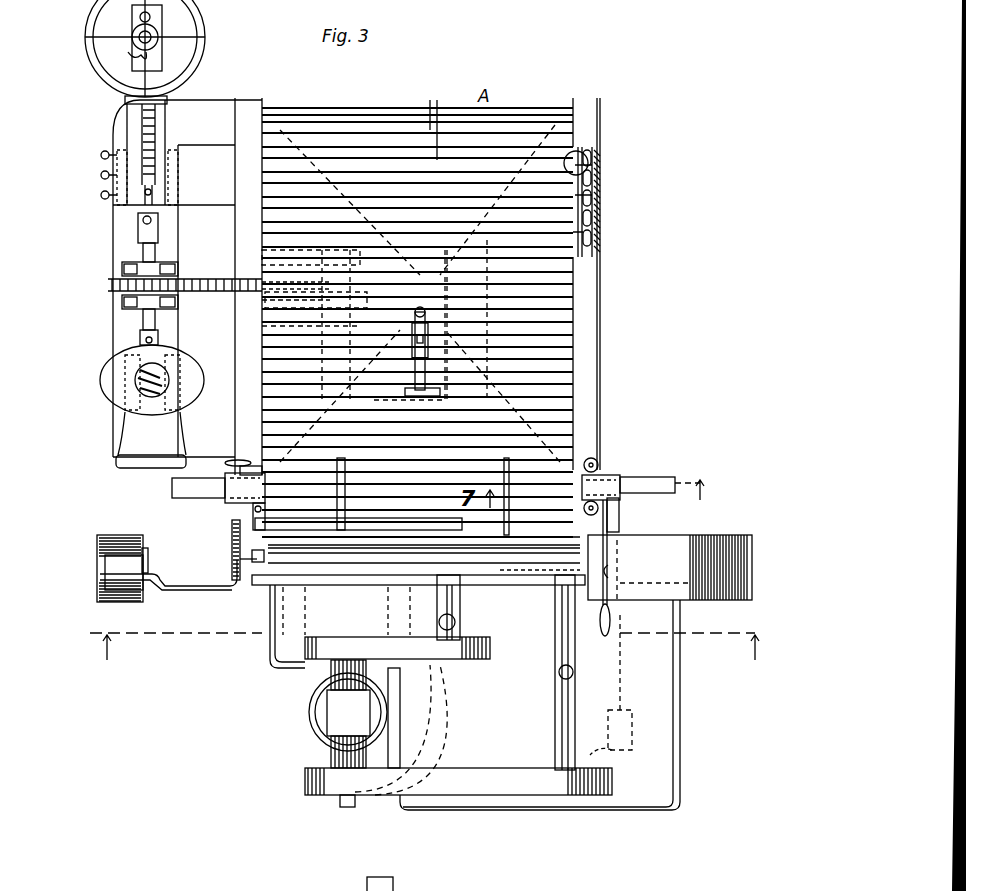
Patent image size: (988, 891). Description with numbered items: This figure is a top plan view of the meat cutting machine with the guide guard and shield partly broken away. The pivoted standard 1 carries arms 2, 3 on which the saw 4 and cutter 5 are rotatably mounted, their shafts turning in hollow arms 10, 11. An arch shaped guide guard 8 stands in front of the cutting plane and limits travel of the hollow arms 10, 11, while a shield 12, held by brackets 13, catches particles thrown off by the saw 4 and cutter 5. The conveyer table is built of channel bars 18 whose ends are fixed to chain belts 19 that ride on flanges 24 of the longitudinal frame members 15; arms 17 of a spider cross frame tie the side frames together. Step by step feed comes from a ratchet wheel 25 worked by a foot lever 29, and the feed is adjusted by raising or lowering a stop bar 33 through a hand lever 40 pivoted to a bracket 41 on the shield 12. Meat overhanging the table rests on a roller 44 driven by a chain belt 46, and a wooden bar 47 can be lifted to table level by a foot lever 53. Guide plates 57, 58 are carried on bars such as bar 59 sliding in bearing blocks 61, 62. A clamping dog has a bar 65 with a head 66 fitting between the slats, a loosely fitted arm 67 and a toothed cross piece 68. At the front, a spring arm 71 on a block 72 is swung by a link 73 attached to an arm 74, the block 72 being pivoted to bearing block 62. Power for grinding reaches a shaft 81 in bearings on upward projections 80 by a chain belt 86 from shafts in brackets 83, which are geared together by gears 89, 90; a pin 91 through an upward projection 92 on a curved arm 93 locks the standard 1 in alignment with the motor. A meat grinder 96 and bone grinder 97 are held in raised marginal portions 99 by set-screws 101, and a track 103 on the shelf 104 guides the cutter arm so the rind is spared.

The pivoted standard 1 is at (312, 702).
The arm 2 is at (470, 660).
The arm 3 is at (498, 768).
The saw 4 is at (400, 586).
The cutter 5 is at (540, 585).
The guide guard 8 is at (160, 586).
The hollow arm 10 is at (456, 605).
The hollow arm 11 is at (556, 625).
The shield 12 is at (645, 548).
The bracket 13 is at (132, 600).
The longitudinal frame member 15 is at (240, 195).
The arm 17 is at (380, 150).
The channel bar 18 is at (424, 123).
The chain belt 19 is at (600, 185).
The flange 24 is at (580, 147).
The ratchet wheel 25 is at (620, 520).
The foot lever 29 is at (624, 685).
The stop bar 33 is at (598, 505).
The hand lever 40 is at (612, 598).
The bracket 41 is at (612, 572).
The roller 44 is at (470, 622).
The chain belt 46 is at (230, 548).
The bar 47 is at (345, 586).
The foot lever 53 is at (615, 752).
The guide plate 57 is at (503, 470).
The guide plate 58 is at (346, 466).
The bar 59 is at (670, 480).
The bearing block 61 is at (612, 477).
The bearing block 62 is at (172, 488).
The bar 65 is at (414, 340).
The head 66 is at (430, 338).
The arm 67 is at (414, 370).
The cross piece 68 is at (405, 392).
The arm 71 is at (385, 518).
The block 72 is at (250, 512).
The link 73 is at (230, 460).
The arm 74 is at (250, 464).
The upward projection 80 is at (178, 266).
The shaft 81 is at (158, 242).
The bracket 83 is at (336, 252).
The chain belt 86 is at (236, 292).
The gear 89 is at (375, 292).
The gear 90 is at (275, 310).
The pin 91 is at (330, 738).
The upward projection 92 is at (310, 758).
The arm 93 is at (368, 808).
The meat grinder 96 is at (140, 405).
The bone grinder 97 is at (105, 45).
The raised marginal portion 99 is at (120, 152).
The set-screw 101 is at (100, 194).
The track 103 is at (540, 648).
The shelf 104 is at (678, 755).